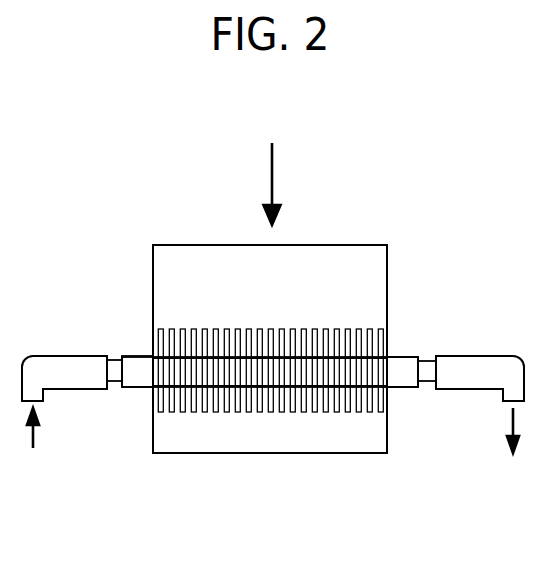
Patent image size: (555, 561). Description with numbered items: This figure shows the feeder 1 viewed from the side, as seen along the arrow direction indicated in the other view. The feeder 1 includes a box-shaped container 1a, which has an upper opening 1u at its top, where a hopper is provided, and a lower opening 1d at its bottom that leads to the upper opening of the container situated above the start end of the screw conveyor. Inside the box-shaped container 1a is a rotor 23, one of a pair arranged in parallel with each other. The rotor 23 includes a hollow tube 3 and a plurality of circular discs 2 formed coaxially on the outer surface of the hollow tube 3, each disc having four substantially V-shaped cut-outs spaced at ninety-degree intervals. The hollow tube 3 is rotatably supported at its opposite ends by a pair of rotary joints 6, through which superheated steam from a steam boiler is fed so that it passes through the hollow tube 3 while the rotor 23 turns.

The feeder 1 is at (313, 203).
The box-shaped container 1a is at (213, 246).
The upper opening 1u is at (333, 245).
The lower opening 1d is at (250, 455).
The circular disc 2 is at (203, 413).
The hollow tube 3 is at (140, 369).
The rotary joint 6 is at (48, 366).
The rotor 23 is at (335, 329).